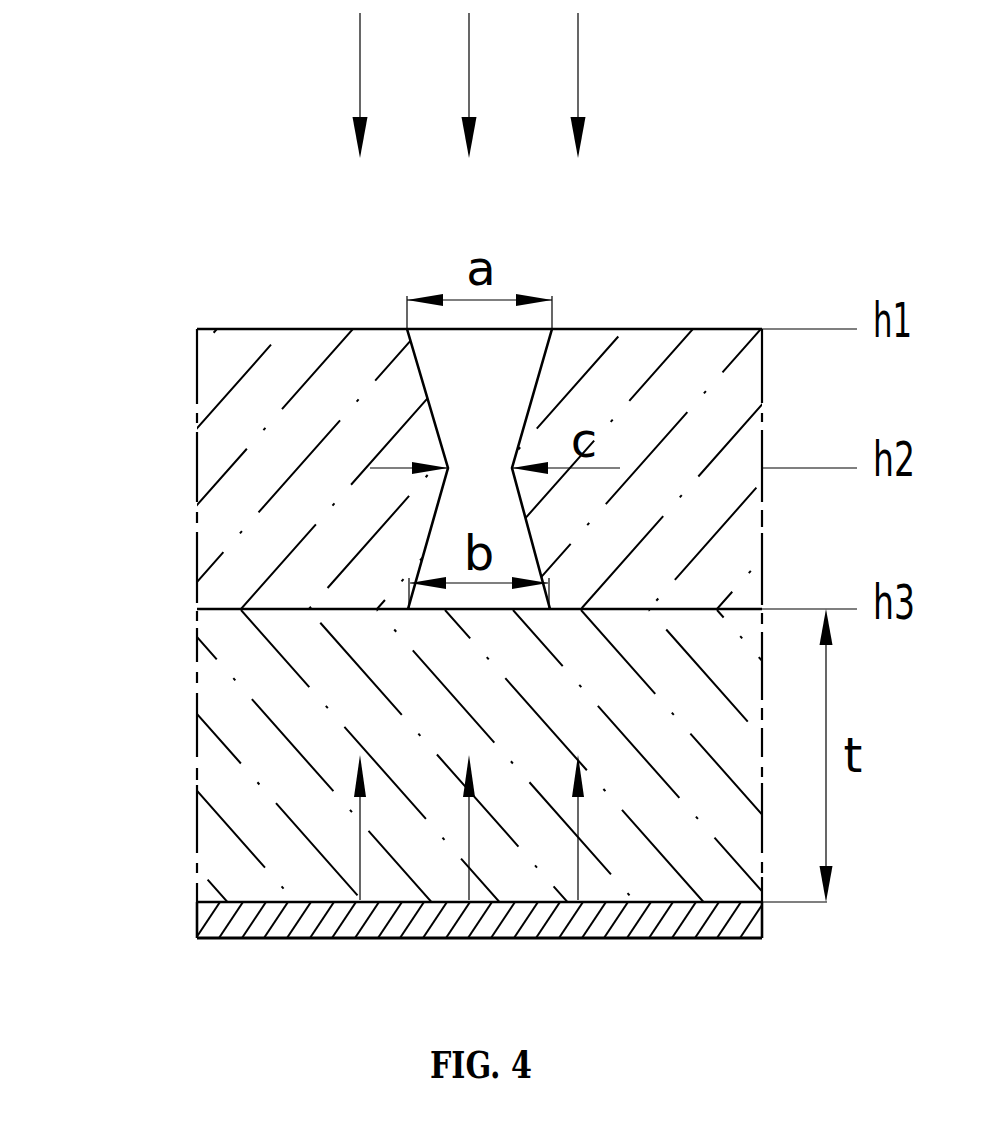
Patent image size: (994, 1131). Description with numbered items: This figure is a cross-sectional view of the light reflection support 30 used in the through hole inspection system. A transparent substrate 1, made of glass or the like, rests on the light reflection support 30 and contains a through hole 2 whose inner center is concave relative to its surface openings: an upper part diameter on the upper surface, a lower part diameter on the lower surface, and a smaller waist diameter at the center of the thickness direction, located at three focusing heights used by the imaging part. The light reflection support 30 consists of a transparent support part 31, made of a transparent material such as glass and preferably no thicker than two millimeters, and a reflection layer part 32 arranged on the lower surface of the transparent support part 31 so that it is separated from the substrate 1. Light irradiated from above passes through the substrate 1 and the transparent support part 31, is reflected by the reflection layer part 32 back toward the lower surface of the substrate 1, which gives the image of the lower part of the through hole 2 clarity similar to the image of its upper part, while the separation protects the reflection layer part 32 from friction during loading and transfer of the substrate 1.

The substrate 1 is at (208, 458).
The through hole 2 is at (532, 400).
The light reflection support 30 is at (89, 767).
The transparent support part 31 is at (197, 780).
The reflection layer part 32 is at (197, 920).